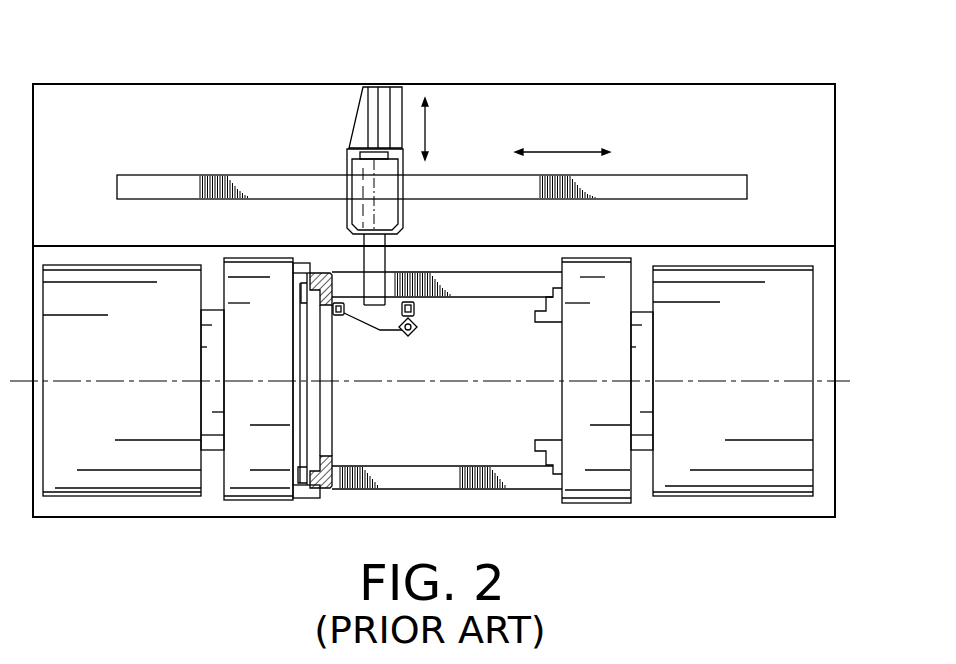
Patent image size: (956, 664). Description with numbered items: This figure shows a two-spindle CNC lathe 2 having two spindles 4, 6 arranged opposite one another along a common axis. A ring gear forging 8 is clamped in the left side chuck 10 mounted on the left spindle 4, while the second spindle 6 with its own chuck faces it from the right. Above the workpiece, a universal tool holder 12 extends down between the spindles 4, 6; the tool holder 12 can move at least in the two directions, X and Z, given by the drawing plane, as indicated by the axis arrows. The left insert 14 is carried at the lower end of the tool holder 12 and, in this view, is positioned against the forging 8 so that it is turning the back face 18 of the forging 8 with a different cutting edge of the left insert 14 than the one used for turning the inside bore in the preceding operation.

The CNC lathe 2 is at (72, 103).
The left spindle 4 is at (266, 358).
The spindle 6 is at (604, 358).
The ring gear forging 8 is at (306, 487).
The left side chuck 10 is at (302, 480).
The universal tool holder 12 is at (375, 292).
The left insert 14 is at (339, 316).
The back face 18 is at (333, 458).